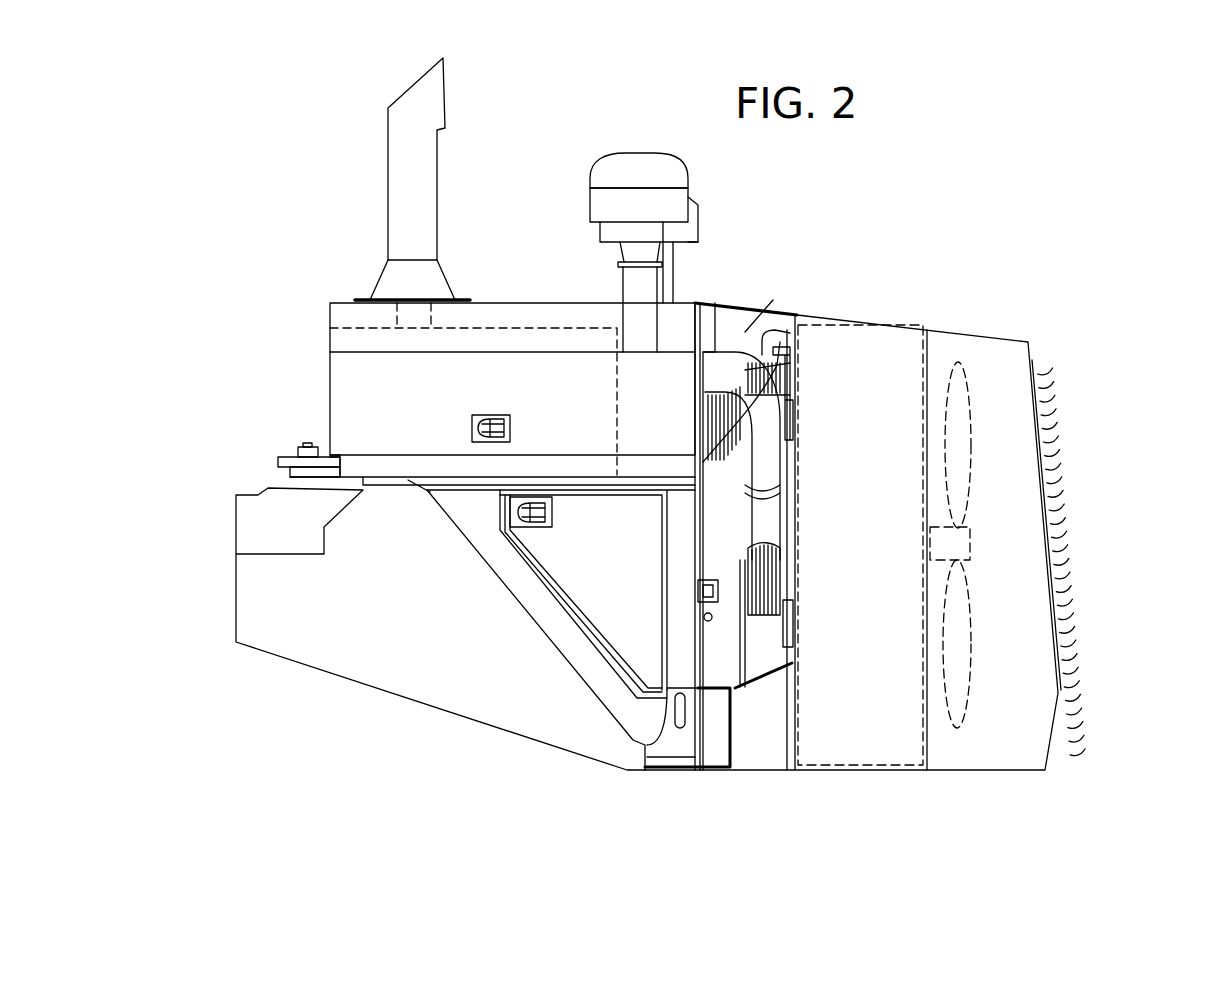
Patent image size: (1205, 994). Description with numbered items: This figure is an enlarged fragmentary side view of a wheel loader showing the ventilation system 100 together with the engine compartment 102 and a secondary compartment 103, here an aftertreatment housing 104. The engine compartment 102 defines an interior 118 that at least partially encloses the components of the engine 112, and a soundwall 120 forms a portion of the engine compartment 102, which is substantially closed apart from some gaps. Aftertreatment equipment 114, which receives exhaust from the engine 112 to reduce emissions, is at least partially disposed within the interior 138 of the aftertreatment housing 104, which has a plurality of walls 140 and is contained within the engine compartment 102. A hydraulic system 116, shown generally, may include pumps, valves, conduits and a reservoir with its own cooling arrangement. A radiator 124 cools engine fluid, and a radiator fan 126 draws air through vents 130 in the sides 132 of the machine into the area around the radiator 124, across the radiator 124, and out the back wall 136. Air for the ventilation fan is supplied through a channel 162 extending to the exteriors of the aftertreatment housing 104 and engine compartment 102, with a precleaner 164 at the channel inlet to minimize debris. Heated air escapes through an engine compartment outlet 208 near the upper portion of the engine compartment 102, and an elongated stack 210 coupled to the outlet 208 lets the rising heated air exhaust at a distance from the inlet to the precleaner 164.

The ventilation system 100 is at (712, 204).
The engine compartment 102 is at (660, 307).
The secondary compartment 103 is at (330, 377).
The aftertreatment housing 104 is at (520, 328).
The engine 112 is at (630, 630).
The aftertreatment equipment 114 is at (360, 423).
The hydraulic system 116 is at (333, 645).
The interior 118 is at (697, 300).
The soundwall 120 is at (720, 673).
The radiator 124 is at (877, 383).
The radiator fan 126 is at (960, 467).
The vents 130 is at (852, 322).
The sides 132 is at (745, 332).
The back wall 136 is at (1050, 405).
The interior 138 is at (362, 328).
The walls 140 is at (467, 328).
The channel 162 is at (622, 283).
The precleaner 164 is at (640, 152).
The engine compartment outlet 208 is at (375, 303).
The elongated stack 210 is at (387, 123).